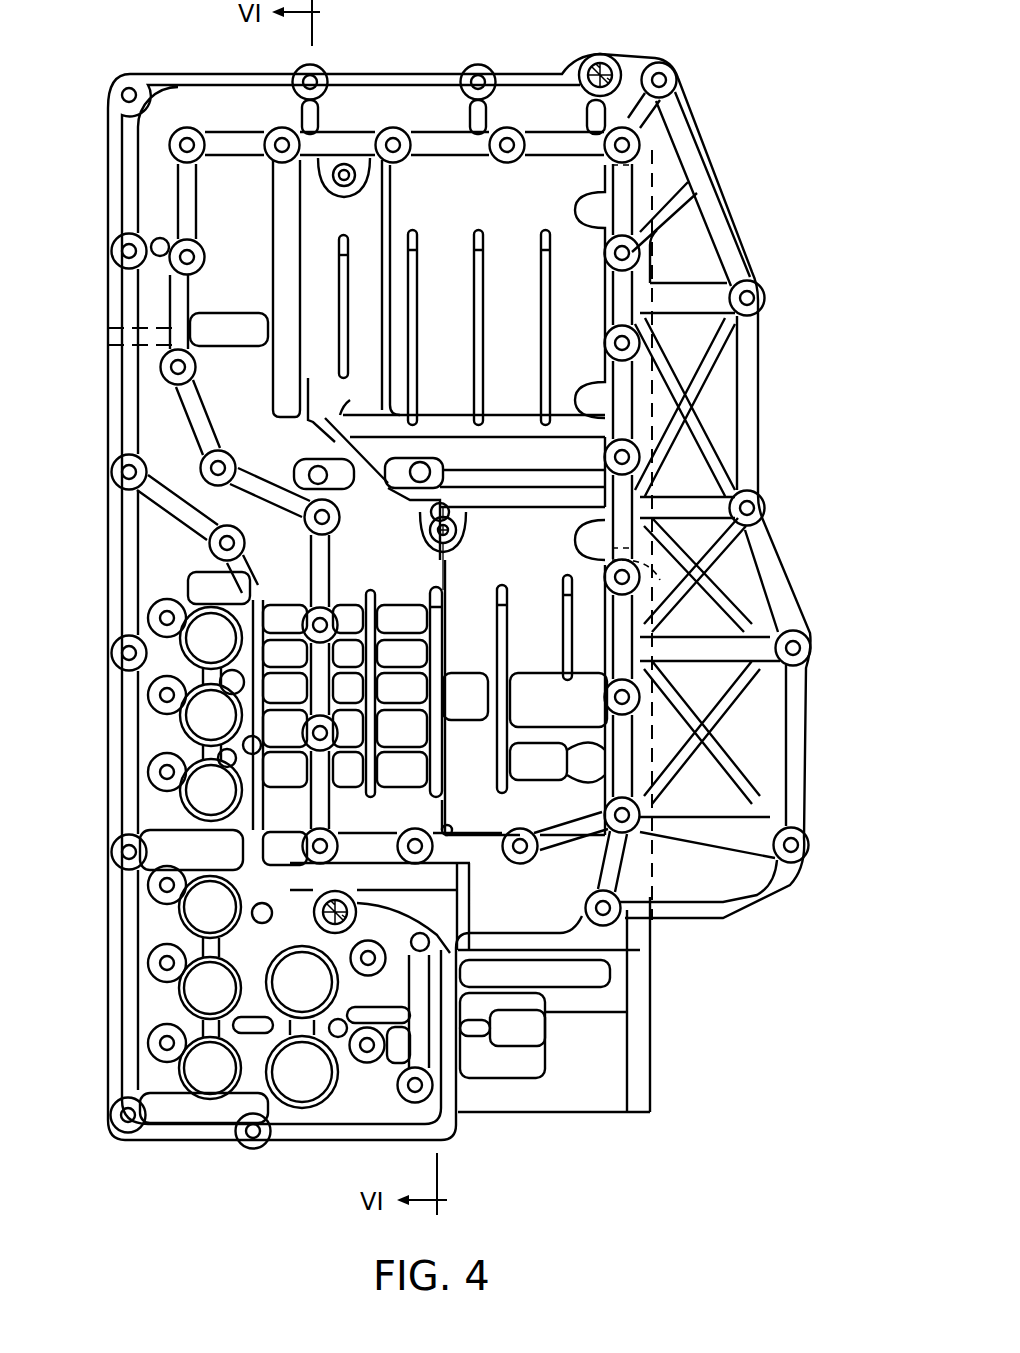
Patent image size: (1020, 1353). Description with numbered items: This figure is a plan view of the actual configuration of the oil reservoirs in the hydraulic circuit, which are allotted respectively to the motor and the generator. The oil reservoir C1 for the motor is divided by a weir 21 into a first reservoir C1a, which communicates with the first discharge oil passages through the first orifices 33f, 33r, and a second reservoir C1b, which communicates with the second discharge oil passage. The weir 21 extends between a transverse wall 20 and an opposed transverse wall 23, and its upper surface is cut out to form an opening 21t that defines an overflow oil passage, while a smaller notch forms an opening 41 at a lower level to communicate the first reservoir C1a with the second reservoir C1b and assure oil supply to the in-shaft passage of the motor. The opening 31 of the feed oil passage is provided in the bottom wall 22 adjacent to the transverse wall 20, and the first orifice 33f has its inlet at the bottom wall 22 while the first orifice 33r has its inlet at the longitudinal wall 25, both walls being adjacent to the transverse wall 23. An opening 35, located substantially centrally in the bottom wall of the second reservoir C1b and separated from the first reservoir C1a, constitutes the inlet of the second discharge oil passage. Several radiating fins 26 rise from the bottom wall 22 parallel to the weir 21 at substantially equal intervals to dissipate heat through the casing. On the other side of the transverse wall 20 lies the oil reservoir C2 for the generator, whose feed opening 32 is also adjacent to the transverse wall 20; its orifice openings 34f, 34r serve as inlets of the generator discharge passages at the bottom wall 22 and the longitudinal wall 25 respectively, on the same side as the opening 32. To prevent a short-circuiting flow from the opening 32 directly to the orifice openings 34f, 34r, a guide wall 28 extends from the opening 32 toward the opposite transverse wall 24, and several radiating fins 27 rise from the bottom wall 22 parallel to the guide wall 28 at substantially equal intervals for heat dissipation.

The second reservoir C1b is at (238, 178).
The oil reservoir C1 is at (552, 178).
The transverse wall 23 is at (447, 135).
The first orifice 33r is at (626, 173).
The first reservoir C1a is at (588, 237).
The opening 21t is at (270, 175).
The first orifice 33f is at (344, 185).
The bottom wall 22 is at (535, 205).
The weir 21 is at (270, 300).
The opening 41 is at (286, 278).
The radiating fins 26 is at (480, 278).
The opening 35 is at (224, 330).
The opening 31 is at (425, 473).
The transverse wall 20 is at (540, 494).
The longitudinal wall 25 is at (626, 478).
The opening 32 is at (316, 482).
The orifice opening 34f is at (456, 531).
The orifice opening 34r is at (668, 580).
The radiating fins 27 is at (498, 633).
The guide wall 28 is at (372, 770).
The transverse wall 24 is at (470, 852).
The oil reservoir C2 is at (540, 798).